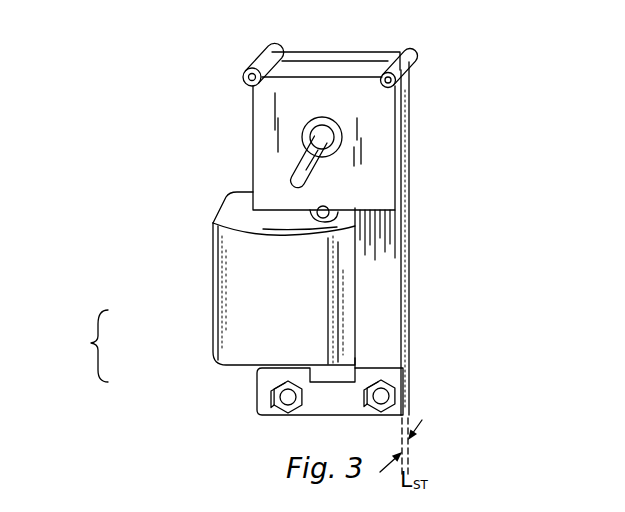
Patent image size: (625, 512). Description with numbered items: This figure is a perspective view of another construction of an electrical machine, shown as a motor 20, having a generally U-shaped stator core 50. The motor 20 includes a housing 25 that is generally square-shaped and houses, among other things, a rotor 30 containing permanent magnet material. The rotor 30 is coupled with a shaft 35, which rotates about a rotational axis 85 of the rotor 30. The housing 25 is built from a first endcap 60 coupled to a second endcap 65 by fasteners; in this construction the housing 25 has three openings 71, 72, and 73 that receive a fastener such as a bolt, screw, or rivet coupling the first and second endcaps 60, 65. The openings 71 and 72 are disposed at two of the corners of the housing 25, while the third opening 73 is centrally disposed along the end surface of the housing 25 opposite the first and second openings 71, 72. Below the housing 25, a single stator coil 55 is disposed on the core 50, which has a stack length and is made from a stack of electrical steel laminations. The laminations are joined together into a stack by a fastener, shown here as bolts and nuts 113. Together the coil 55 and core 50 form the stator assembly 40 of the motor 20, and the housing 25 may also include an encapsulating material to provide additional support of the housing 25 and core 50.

The motor 20 is at (148, 70).
The housing 25 is at (384, 154).
The rotor 30 is at (368, 122).
The shaft 35 is at (298, 166).
The motor assembly 40 is at (93, 339).
The core 50 is at (370, 299).
The coil 55 is at (250, 329).
The first endcap 60 is at (378, 187).
The second endcap 65 is at (410, 98).
The opening 71 is at (244, 71).
The opening 72 is at (412, 71).
The opening 73 is at (330, 214).
The rotational axis 85 is at (297, 194).
The bolts and nuts 113 is at (275, 402).